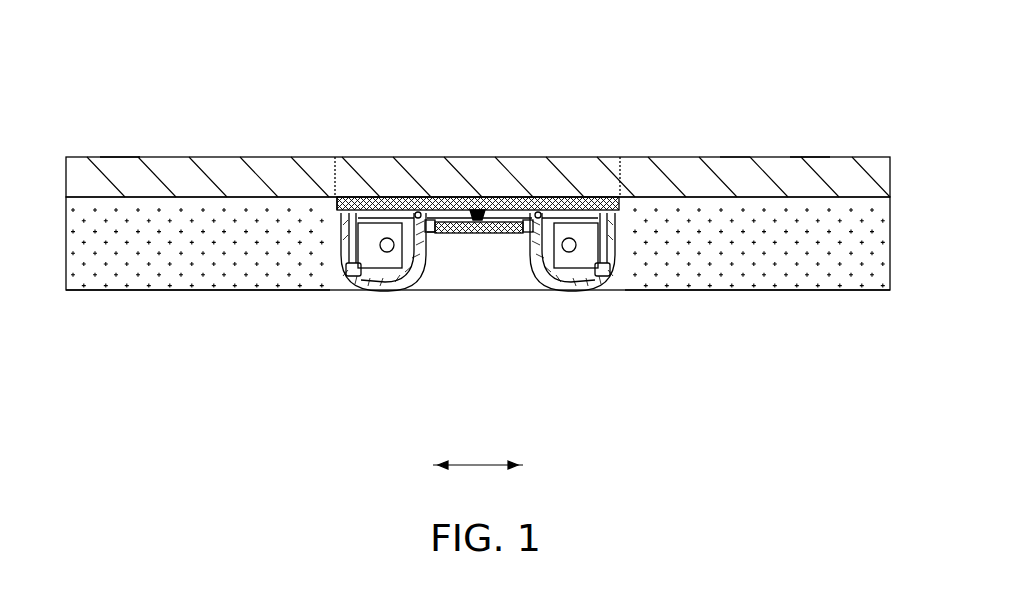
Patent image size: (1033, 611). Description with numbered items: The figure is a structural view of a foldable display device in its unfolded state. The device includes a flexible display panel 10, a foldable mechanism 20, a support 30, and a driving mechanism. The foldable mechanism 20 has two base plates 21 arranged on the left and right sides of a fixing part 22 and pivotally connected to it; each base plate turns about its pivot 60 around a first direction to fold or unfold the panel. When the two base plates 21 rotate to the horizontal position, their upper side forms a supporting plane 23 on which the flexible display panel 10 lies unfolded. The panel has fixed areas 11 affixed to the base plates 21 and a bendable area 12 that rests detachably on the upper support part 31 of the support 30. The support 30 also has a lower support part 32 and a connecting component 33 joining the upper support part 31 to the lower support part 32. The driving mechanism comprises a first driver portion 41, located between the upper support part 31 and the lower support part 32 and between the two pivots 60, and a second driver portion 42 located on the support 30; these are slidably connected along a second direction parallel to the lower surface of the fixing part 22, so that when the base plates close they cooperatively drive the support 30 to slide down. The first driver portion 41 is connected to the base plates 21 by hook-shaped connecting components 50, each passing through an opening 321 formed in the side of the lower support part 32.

The flexible display panel 10 is at (253, 157).
The fixed areas 11 is at (122, 135).
The bendable area 12 is at (588, 150).
The foldable mechanism 20 is at (186, 302).
The base plates 21 is at (253, 281).
The fixing part 22 is at (398, 293).
The supporting plane 23 is at (733, 157).
The support 30 is at (541, 192).
The upper support part 31 is at (372, 197).
The lower support part 32 is at (490, 236).
The opening 321 is at (530, 236).
The connecting component 33 is at (481, 210).
The first driver portion 41 is at (427, 197).
The second driver portion 42 is at (442, 238).
The connecting component 50 is at (345, 288).
The pivot 60 is at (603, 277).